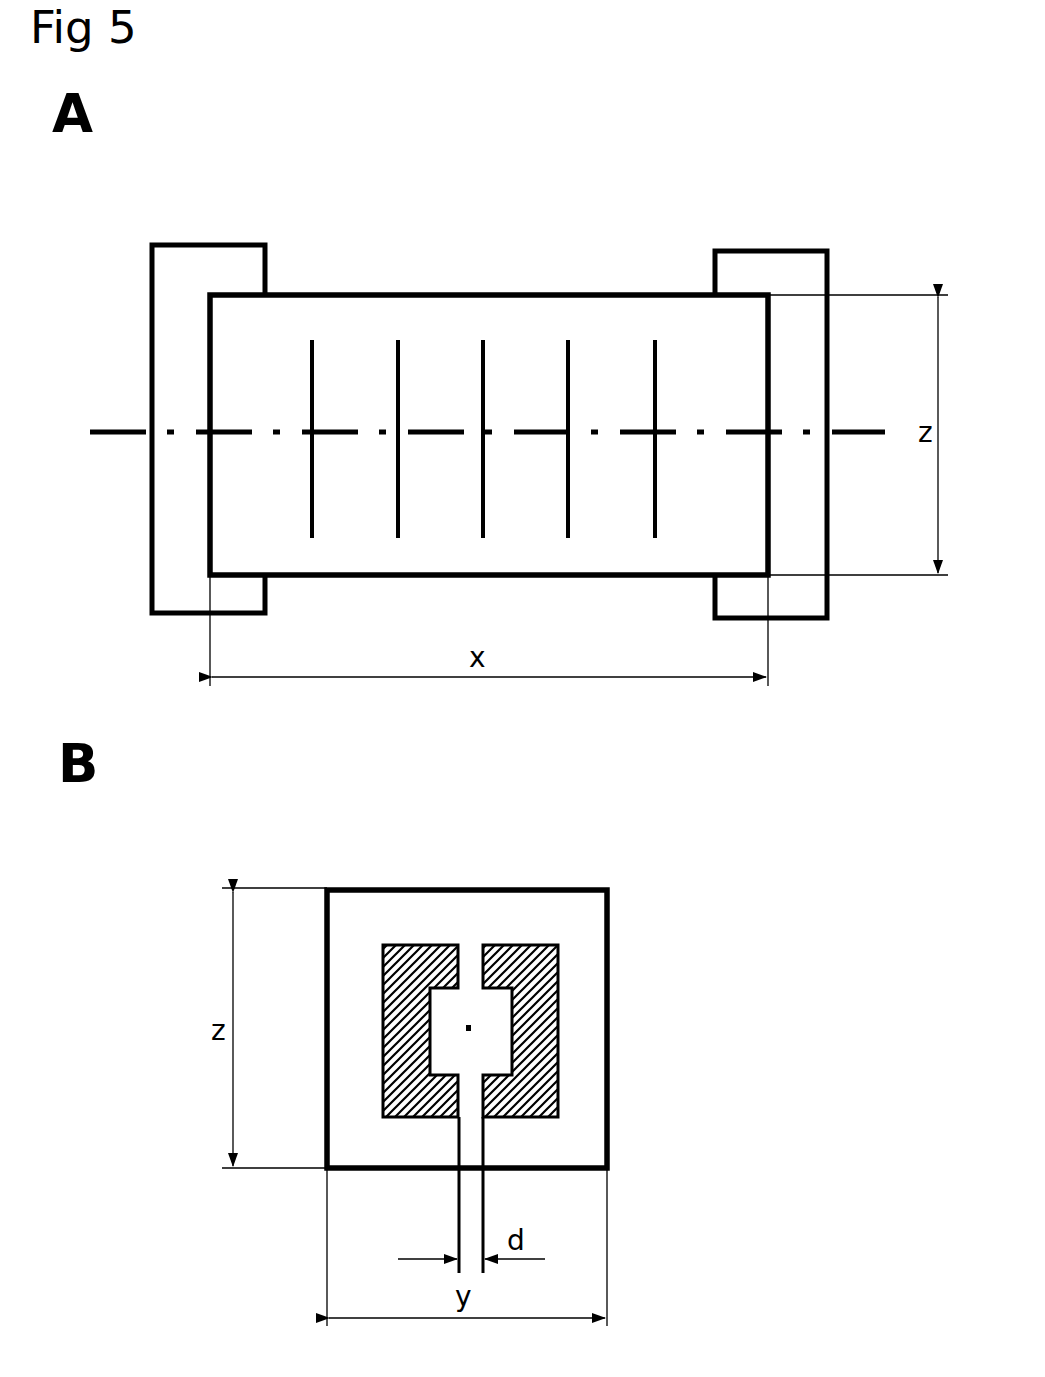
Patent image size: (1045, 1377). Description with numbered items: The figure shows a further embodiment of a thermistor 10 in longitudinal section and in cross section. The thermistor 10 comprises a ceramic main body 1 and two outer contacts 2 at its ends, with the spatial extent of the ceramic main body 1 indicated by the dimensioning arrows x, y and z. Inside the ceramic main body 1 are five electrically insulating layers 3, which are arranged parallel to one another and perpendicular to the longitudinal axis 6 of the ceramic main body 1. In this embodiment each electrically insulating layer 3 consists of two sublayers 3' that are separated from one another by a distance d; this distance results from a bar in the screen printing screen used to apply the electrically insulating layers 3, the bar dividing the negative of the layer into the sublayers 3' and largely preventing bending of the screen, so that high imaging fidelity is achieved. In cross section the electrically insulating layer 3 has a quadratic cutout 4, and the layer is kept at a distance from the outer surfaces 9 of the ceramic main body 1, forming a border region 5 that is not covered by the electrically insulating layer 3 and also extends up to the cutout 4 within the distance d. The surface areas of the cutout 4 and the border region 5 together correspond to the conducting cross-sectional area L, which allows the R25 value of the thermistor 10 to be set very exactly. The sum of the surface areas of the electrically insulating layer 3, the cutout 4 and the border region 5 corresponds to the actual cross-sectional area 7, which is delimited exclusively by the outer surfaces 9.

In FIG. 5A, the thermistor 10 is at (355, 208).
In FIG. 5A, the ceramic main body 1 is at (673, 318).
In FIG. 5B, the ceramic main body 1 is at (483, 912).
In FIG. 5A, the outer contact 2 is at (812, 363).
In FIG. 5A, the electrically insulating layer 3 is at (483, 351).
In FIG. 5B, the electrically insulating layer 3 is at (603, 1109).
In FIG. 5B, the sublayer 3' is at (545, 969).
In FIG. 5B, the cutout 4 is at (473, 1010).
In FIG. 5B, the border region 5 is at (595, 1048).
In FIG. 5A, the longitudinal axis 6 is at (131, 437).
In FIG. 5B, the longitudinal axis 6 is at (468, 1033).
In FIG. 5B, the actual cross-sectional area 7 is at (639, 1109).
In FIG. 5B, the outer surface 9 is at (348, 888).
In FIG. 5B, the conducting cross-sectional area L is at (538, 960).